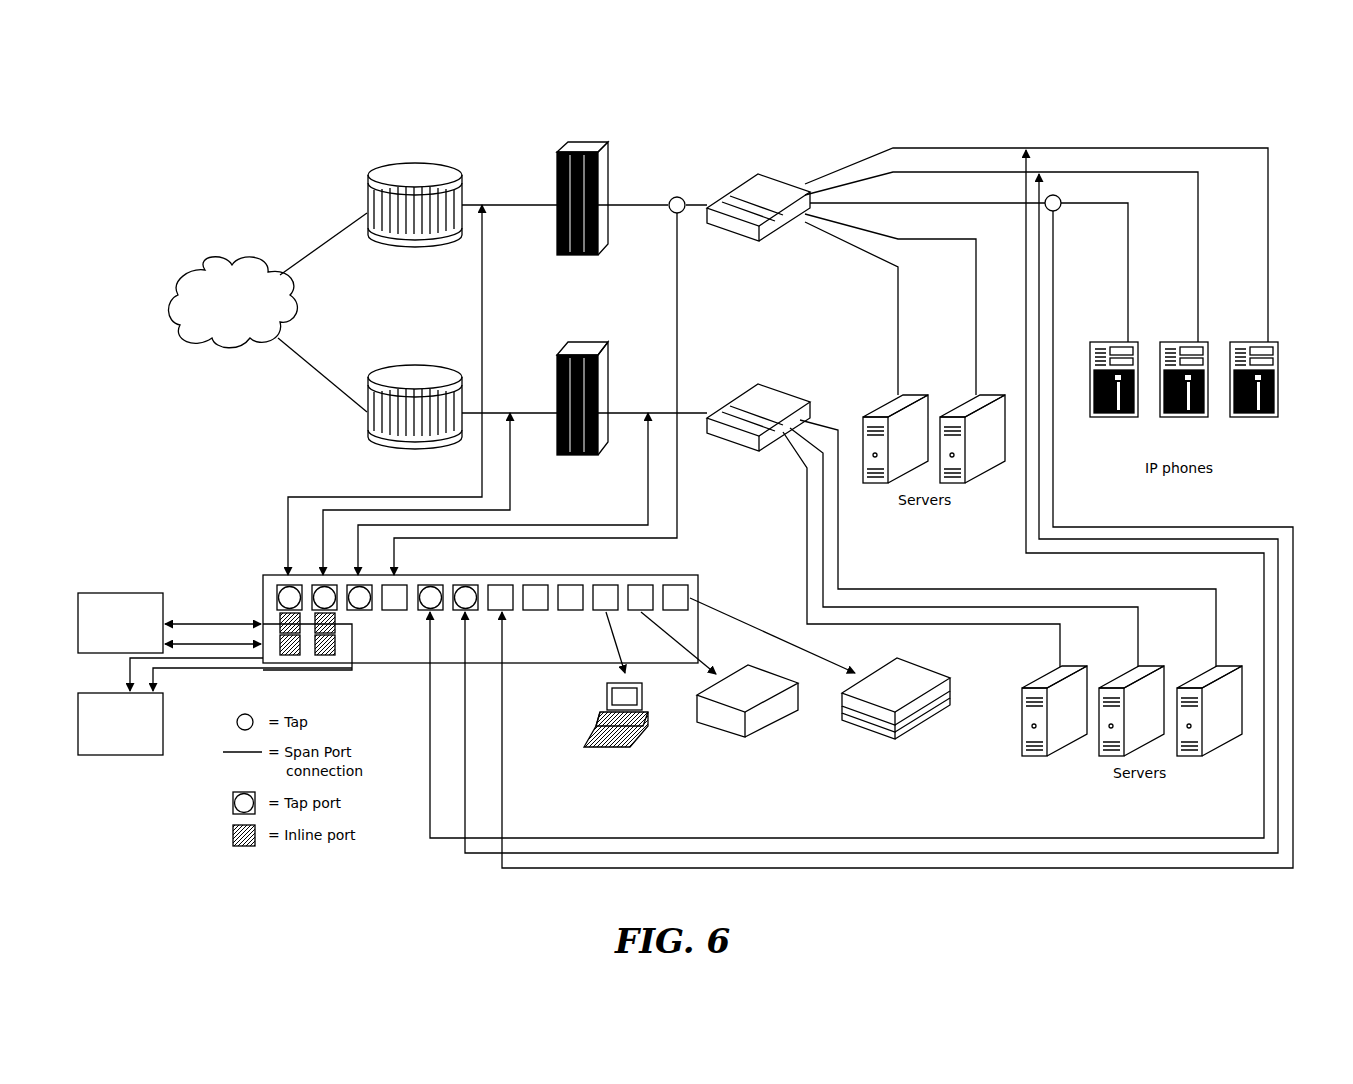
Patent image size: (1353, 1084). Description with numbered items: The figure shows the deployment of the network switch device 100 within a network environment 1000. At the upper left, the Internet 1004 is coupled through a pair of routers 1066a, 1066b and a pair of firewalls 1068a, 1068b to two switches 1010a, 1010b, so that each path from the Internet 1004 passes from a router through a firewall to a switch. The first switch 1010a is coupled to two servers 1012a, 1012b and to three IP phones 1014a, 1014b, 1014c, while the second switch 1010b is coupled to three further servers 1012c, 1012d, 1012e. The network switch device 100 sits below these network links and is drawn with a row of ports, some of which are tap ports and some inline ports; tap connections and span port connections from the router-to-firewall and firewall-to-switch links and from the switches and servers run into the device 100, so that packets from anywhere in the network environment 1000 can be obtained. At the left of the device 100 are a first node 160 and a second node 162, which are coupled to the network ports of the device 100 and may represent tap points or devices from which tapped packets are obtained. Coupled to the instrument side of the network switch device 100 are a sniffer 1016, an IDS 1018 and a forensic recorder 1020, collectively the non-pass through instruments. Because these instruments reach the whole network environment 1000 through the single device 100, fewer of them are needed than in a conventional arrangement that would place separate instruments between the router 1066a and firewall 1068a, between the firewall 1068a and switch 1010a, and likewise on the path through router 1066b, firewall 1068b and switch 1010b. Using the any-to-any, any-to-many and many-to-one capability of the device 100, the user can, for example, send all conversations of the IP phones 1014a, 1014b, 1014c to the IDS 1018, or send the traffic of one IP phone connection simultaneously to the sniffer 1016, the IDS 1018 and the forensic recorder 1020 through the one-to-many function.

The network environment 1000 is at (1222, 112).
The Internet 1004 is at (220, 258).
The router 1066a is at (410, 163).
The router 1066b is at (410, 365).
The firewall 1068a is at (580, 140).
The firewall 1068b is at (560, 350).
The switch 1010a is at (732, 188).
The switch 1010b is at (730, 398).
The server 1012a is at (878, 487).
The server 1012b is at (982, 487).
The server 1012c is at (1030, 760).
The server 1012d is at (1107, 760).
The server 1012e is at (1185, 760).
The IP phone 1014a is at (1100, 419).
The IP phone 1014b is at (1170, 419).
The IP phone 1014c is at (1240, 419).
The sniffer 1016 is at (595, 752).
The IDS 1018 is at (702, 727).
The forensic recorder 1020 is at (847, 735).
The network switch device 100 is at (262, 578).
The first node 160 is at (115, 590).
The second node 162 is at (108, 757).